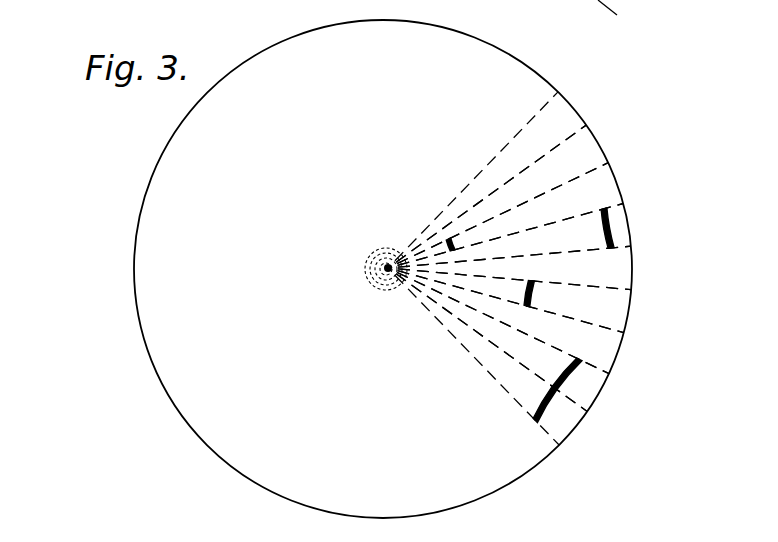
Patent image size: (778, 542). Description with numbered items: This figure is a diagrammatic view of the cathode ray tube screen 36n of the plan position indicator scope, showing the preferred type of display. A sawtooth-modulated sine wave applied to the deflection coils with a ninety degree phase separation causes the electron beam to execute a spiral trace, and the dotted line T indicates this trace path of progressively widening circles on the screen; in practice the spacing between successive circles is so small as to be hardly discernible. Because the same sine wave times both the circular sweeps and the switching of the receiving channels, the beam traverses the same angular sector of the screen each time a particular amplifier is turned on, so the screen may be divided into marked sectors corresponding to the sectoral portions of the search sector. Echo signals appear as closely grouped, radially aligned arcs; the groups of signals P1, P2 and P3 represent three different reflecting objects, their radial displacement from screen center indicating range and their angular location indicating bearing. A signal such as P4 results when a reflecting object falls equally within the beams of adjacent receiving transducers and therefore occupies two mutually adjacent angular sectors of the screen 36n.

The cathode ray tube screen 36n is at (470, 60).
The trace path T is at (358, 308).
The group of signals P1 is at (456, 242).
The group of signals P2 is at (534, 293).
The group of signals P3 is at (613, 224).
The signal P4 is at (568, 385).